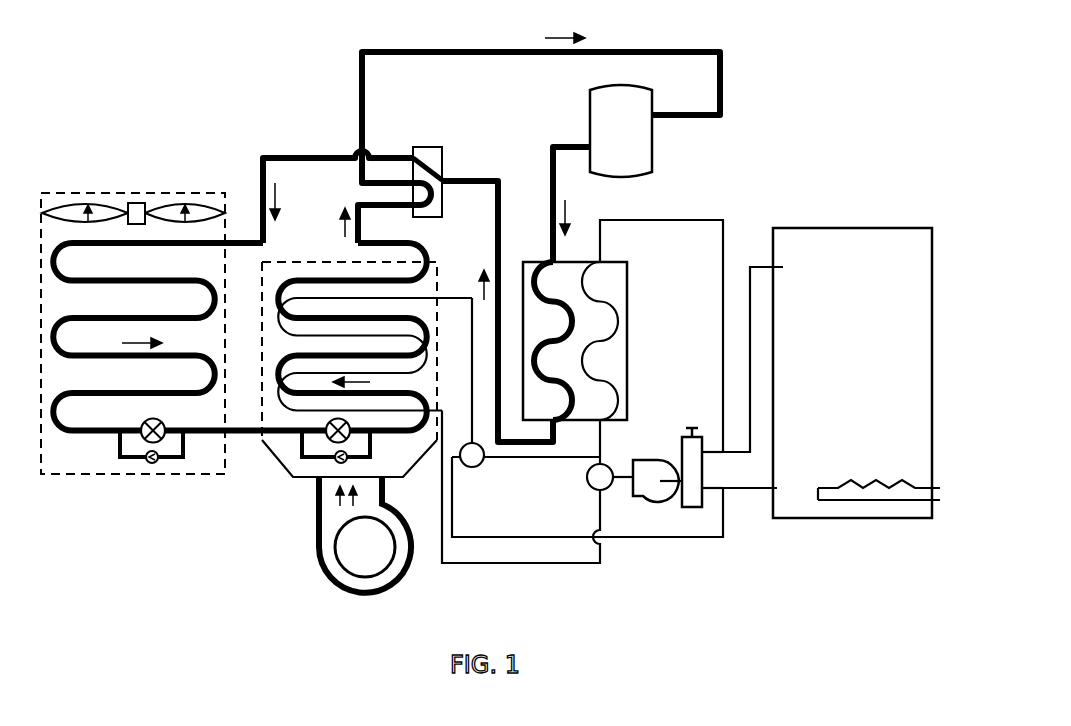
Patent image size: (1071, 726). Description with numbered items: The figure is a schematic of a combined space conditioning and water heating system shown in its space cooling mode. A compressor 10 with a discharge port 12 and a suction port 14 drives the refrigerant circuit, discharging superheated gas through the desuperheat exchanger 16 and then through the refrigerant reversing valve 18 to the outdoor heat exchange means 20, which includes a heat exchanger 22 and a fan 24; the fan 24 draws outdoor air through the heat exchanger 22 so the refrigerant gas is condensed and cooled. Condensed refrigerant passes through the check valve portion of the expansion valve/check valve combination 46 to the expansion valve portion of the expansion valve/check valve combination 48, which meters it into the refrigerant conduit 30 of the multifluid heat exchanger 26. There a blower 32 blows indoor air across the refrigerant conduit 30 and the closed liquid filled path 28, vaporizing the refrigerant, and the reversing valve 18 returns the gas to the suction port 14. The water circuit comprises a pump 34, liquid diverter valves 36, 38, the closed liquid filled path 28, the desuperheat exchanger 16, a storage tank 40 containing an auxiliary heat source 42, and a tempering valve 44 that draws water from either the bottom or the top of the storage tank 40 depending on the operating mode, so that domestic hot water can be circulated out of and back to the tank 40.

The compressor 10 is at (590, 100).
The discharge port 12 is at (586, 149).
The suction port 14 is at (673, 118).
The desuperheat exchanger 16 is at (630, 287).
The refrigerant reversing valve 18 is at (447, 163).
The first selectively actuated heat exchange means 20 is at (90, 480).
The heat exchanger 22 is at (220, 290).
The fan 24 is at (90, 200).
The multifluid heat exchanger 26 is at (278, 262).
The closed liquid filled path 28 is at (425, 362).
The refrigerant conduit 30 is at (280, 366).
The blower 32 is at (314, 528).
The pump 34 is at (637, 460).
The liquid diverter valve 36 is at (599, 491).
The liquid diverter valve 38 is at (472, 468).
The storage tank 40 is at (796, 228).
The auxiliary heat source 42 is at (826, 487).
The tempering valve 44 is at (684, 432).
The expansion valve/check valve combination 46 is at (166, 426).
The expansion valve/check valve combination 48 is at (327, 426).